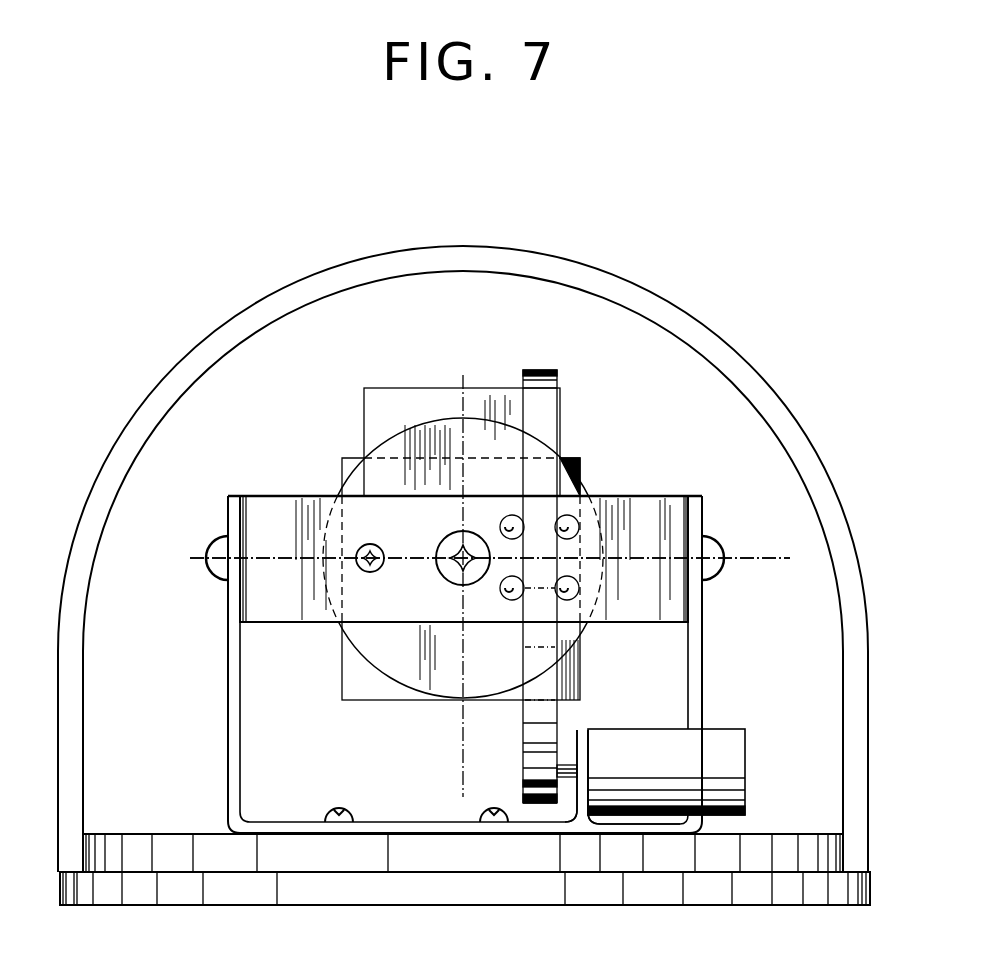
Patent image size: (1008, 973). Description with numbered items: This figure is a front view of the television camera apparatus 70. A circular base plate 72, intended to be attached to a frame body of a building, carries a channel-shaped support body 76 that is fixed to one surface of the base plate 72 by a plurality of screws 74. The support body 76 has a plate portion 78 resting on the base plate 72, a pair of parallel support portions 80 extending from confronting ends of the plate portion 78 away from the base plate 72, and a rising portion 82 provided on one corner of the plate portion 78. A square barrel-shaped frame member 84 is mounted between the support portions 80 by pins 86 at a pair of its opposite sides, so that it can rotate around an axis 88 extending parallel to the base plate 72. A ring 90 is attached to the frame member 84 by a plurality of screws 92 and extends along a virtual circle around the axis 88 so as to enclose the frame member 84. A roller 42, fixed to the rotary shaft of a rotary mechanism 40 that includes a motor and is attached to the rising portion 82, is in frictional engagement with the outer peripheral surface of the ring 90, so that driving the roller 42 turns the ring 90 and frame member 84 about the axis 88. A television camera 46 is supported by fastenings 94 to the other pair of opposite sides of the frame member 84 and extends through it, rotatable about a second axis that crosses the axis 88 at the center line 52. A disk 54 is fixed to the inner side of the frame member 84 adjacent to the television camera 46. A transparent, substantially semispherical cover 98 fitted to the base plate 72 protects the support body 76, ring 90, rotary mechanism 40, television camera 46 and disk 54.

The television camera apparatus 70 is at (690, 302).
The cover 98 is at (808, 442).
The base plate 72 is at (603, 905).
The support body 76 is at (325, 838).
The plate portion 78 is at (393, 838).
The support portions 80 is at (228, 743).
The frame member 84 is at (273, 505).
The pins 86 is at (215, 570).
The axis 88 is at (765, 555).
The television camera 46 is at (386, 398).
The disk 54 is at (437, 410).
The center line 52 is at (460, 705).
The ring 90 is at (540, 368).
The screws 92 is at (565, 530).
The fastenings 94 is at (445, 570).
The roller 42 is at (523, 762).
The rotary mechanism 40 is at (745, 758).
The rising portion 82 is at (588, 755).
The screws 74 is at (485, 815).